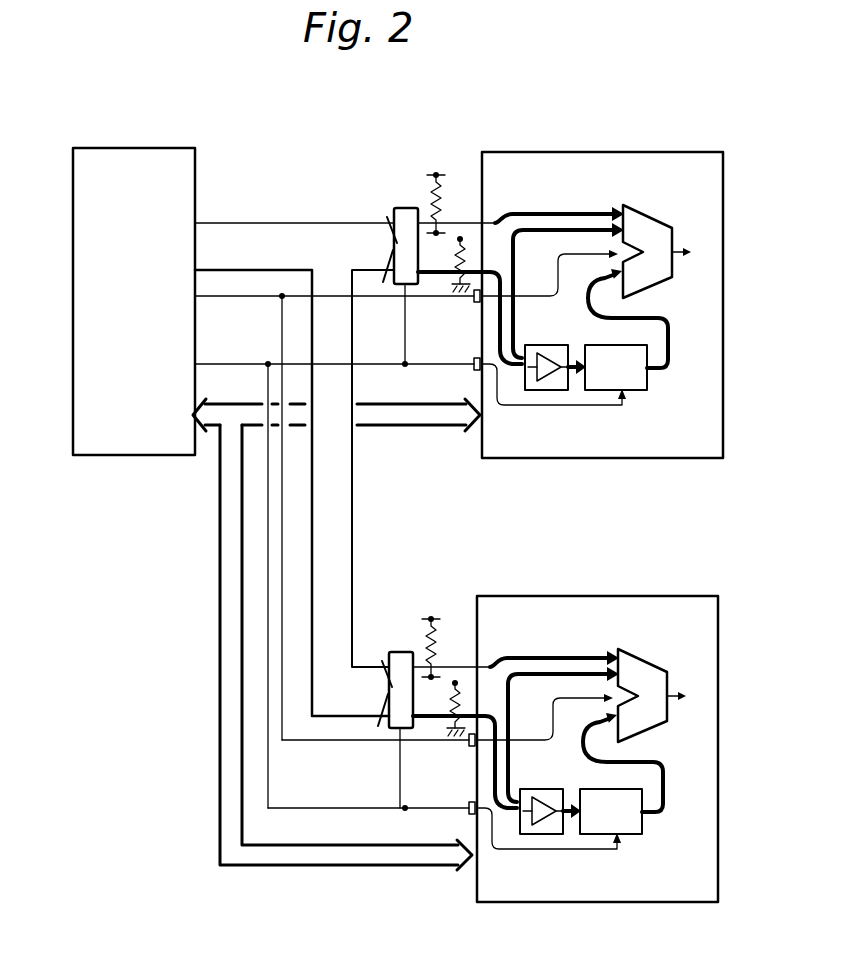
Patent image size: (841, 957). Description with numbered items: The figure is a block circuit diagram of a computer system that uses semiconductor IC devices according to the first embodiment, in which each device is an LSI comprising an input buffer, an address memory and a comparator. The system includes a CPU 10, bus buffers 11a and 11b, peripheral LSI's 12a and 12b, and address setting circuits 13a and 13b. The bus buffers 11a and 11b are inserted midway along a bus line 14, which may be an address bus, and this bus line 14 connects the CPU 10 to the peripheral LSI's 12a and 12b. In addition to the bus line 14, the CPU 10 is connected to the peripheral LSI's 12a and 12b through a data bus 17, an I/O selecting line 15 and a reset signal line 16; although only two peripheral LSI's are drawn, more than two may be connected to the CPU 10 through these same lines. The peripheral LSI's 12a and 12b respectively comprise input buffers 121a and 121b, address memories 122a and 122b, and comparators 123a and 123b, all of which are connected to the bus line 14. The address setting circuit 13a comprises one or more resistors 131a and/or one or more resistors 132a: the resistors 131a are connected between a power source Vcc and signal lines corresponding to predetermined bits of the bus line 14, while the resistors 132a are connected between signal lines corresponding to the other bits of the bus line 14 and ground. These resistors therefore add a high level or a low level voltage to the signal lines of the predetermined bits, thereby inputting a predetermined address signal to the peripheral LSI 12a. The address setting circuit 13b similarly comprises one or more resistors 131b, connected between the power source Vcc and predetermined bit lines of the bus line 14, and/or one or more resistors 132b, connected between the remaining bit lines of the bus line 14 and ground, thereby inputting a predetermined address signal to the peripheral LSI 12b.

The CPU 10 is at (118, 456).
The bus buffer 11a is at (403, 208).
The bus buffer 11b is at (383, 710).
The peripheral LSI 12a is at (588, 459).
The peripheral LSI 12b is at (565, 773).
The address setting circuit 13a is at (465, 201).
The address setting circuit 13b is at (437, 657).
The bus line 14 is at (497, 233).
The I/O selecting line 15 is at (377, 297).
The reset signal line 16 is at (292, 362).
The data bus 17 is at (434, 428).
The input buffer 121a is at (538, 391).
The input buffer 121b is at (530, 841).
The address memory 122a is at (642, 391).
The address memory 122b is at (635, 823).
The comparator 123a is at (631, 206).
The comparator 123b is at (649, 681).
The resistor 131a is at (430, 207).
The resistor 131b is at (412, 613).
The resistor 132a is at (453, 256).
The resistor 132b is at (439, 726).